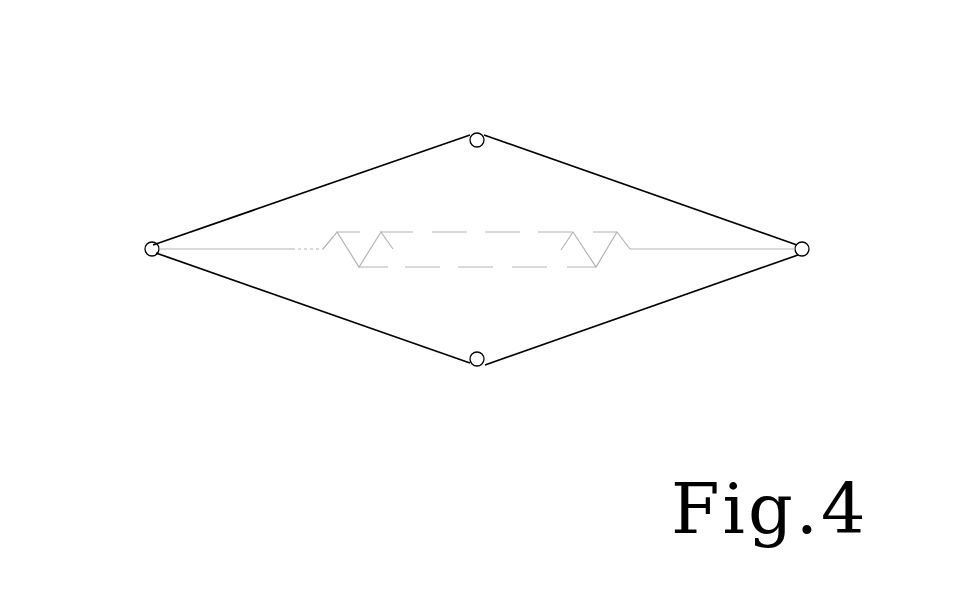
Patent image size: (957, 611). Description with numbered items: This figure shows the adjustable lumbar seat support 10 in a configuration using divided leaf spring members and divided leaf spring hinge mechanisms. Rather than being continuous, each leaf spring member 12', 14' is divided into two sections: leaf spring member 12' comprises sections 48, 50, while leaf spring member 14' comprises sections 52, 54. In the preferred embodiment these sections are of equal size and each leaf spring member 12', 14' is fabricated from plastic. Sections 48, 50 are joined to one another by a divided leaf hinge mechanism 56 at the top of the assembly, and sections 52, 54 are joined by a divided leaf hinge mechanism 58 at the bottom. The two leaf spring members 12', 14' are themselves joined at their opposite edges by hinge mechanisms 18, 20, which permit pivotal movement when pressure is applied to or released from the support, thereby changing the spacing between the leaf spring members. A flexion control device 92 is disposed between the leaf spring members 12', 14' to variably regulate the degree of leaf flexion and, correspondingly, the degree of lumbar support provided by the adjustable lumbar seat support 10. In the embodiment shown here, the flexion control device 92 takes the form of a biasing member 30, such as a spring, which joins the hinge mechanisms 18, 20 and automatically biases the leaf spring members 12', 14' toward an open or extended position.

The adjustable lumbar seat support 10 is at (367, 148).
The leaf spring member 12' is at (515, 141).
The leaf spring member 14' is at (464, 349).
The hinge mechanism 18 is at (145, 253).
The hinge mechanism 20 is at (810, 249).
The biasing member 30 is at (606, 251).
The section 48 is at (595, 174).
The section 50 is at (250, 211).
The section 52 is at (565, 340).
The section 54 is at (231, 283).
The divided leaf hinge mechanism 56 is at (478, 132).
The divided leaf hinge mechanism 58 is at (477, 367).
The flexion control device 92 is at (475, 277).